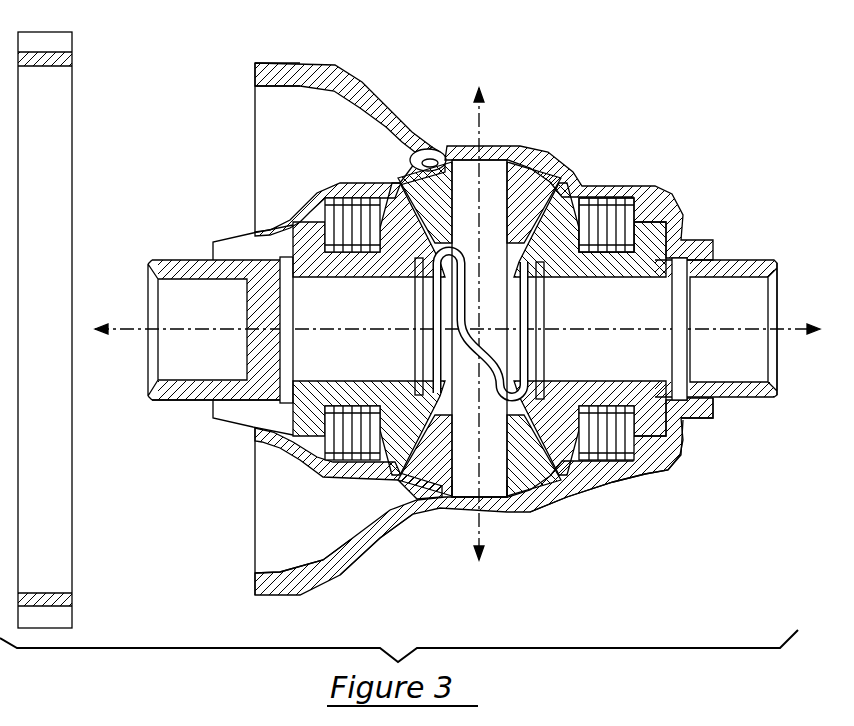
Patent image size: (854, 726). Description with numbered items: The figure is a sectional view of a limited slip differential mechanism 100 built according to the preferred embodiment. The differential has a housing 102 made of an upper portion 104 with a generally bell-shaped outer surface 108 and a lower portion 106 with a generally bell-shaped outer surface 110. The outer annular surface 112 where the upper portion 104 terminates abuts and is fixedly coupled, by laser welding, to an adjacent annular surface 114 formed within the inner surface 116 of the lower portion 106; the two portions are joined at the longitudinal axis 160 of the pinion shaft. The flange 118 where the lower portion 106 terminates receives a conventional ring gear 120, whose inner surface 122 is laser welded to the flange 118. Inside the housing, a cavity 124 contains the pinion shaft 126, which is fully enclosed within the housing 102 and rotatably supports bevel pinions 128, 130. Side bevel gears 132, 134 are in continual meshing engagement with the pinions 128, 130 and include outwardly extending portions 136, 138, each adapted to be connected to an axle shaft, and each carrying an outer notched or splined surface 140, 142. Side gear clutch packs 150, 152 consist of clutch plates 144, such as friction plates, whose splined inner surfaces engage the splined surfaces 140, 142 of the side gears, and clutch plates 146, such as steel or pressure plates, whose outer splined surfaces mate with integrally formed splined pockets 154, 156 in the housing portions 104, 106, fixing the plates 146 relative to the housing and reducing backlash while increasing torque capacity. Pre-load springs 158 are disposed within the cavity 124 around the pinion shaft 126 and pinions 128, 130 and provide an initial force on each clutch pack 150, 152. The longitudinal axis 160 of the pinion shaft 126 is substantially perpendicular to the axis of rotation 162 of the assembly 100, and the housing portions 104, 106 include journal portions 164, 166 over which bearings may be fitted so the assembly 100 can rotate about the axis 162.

The limited slip differential mechanism 100 is at (183, 92).
The housing 102 is at (380, 104).
The upper portion 104 is at (165, 255).
The lower portion 106 is at (298, 594).
The bell-shaped outer surface 108 is at (325, 185).
The bell-shaped outer surface 110 is at (565, 485).
The outer annular surface 112 is at (457, 143).
The annular surface 114 is at (414, 158).
The inner surface 116 is at (345, 545).
The flange 118 is at (260, 63).
The ring gear 120 is at (73, 510).
The inner surface 122 is at (48, 594).
The cavity 124 is at (385, 197).
The pinion shaft 126 is at (467, 488).
The bevel pinion 128 is at (440, 500).
The bevel pinion 130 is at (515, 170).
The side bevel gear 132 is at (408, 485).
The side bevel gear 134 is at (575, 210).
The outwardly extending portion 136 is at (678, 243).
The outwardly extending portion 138 is at (290, 226).
The outer splined surface 140 is at (305, 460).
The outer splined surface 142 is at (648, 466).
The clutch plates 144 is at (623, 213).
The clutch plates 146 is at (613, 198).
The side gear clutch pack 150 is at (287, 468).
The side gear clutch pack 152 is at (650, 472).
The splined pocket 154 is at (363, 463).
The splined pocket 156 is at (608, 462).
The pre-load spring 158 is at (528, 485).
The longitudinal axis 160 is at (483, 540).
The axis of rotation 162 is at (793, 326).
The journal portion 164 is at (185, 402).
The journal portion 166 is at (782, 256).